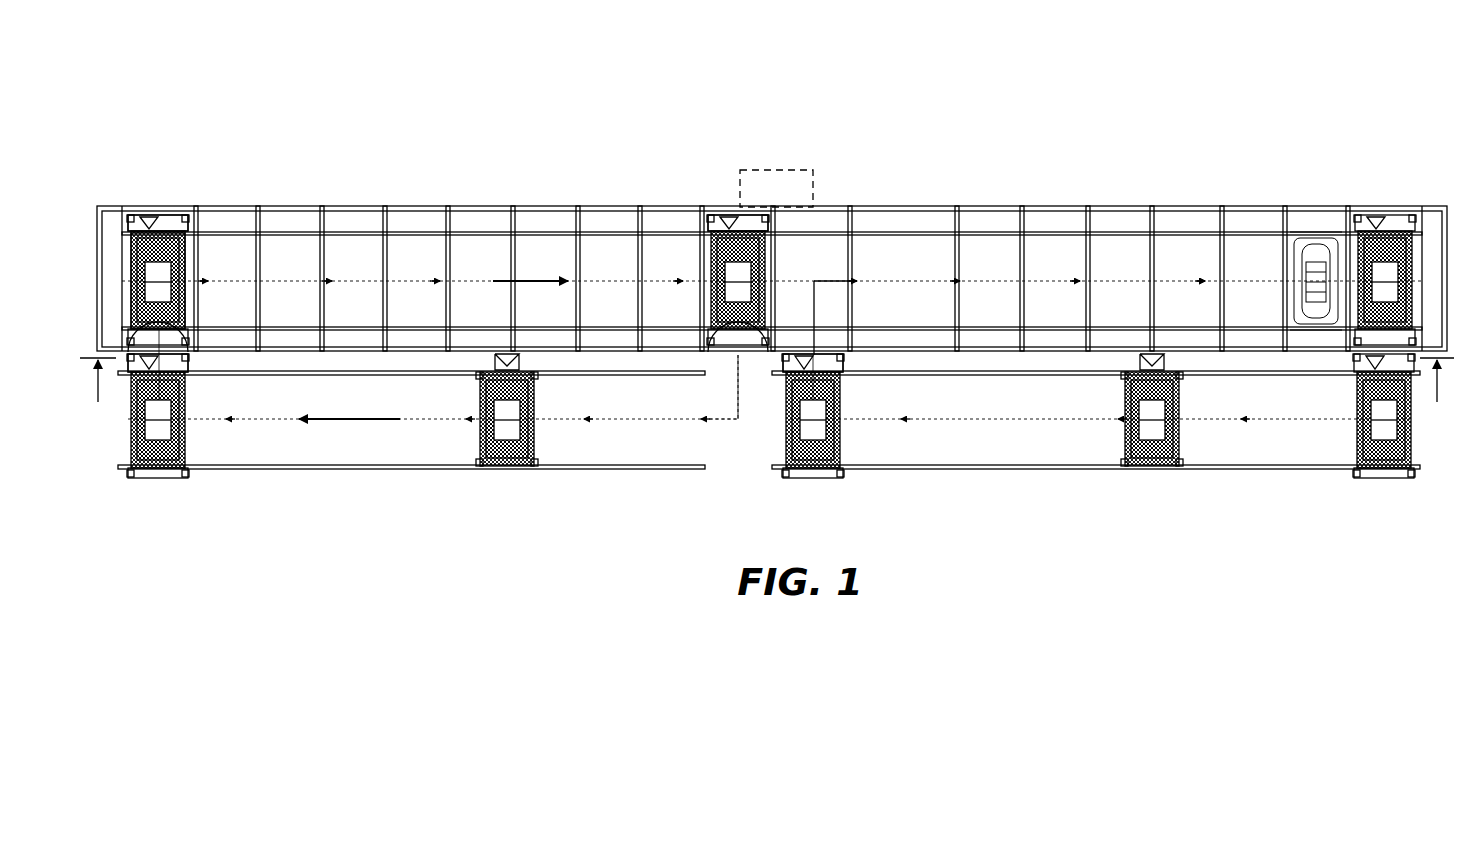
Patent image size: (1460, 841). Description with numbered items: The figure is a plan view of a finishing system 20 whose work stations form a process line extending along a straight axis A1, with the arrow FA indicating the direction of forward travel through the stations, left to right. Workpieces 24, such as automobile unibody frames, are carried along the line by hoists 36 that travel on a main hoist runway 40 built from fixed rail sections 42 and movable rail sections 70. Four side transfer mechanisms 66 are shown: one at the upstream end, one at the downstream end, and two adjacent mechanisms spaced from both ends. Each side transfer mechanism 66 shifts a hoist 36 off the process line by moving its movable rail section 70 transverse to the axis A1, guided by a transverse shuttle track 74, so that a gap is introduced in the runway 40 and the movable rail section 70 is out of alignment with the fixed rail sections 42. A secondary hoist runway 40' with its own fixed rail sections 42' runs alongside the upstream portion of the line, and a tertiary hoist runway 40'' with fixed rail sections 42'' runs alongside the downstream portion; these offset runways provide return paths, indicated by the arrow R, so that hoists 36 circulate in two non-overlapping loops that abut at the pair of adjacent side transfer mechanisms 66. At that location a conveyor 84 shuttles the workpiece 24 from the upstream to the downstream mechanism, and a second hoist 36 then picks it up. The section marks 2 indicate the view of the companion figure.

The finishing system 20 is at (228, 100).
The workpiece 24 is at (150, 230).
The hoist 36 is at (196, 251).
The hoist runway 40 is at (767, 311).
The secondary hoist runway 40' is at (512, 422).
The tertiary hoist runway 40'' is at (1096, 456).
The fixed rail section 42 is at (772, 223).
The fixed rail section 42' is at (411, 465).
The fixed rail section 42'' is at (1096, 465).
The side transfer mechanism 66 is at (148, 168).
The movable rail section 70 is at (166, 238).
The transverse shuttle track 74 is at (190, 360).
The conveyor 84 is at (740, 185).
The axis A1 is at (358, 281).
The arrow FA is at (498, 285).
The return direction R is at (358, 423).
The section line 2- 2 is at (767, 396).